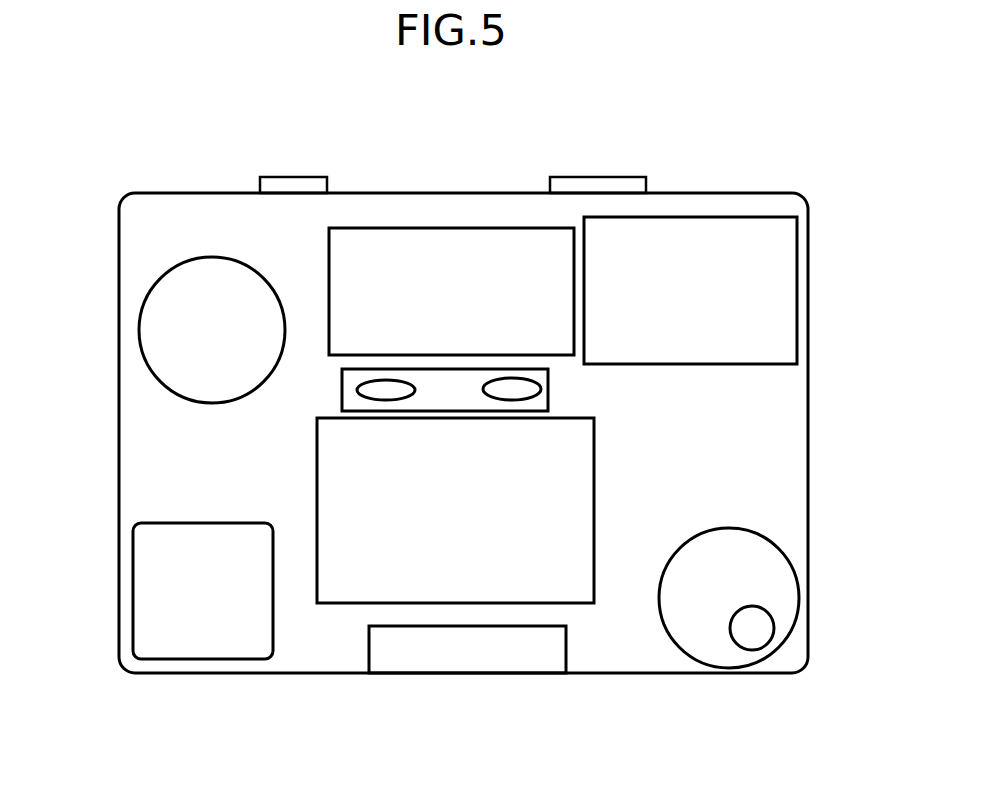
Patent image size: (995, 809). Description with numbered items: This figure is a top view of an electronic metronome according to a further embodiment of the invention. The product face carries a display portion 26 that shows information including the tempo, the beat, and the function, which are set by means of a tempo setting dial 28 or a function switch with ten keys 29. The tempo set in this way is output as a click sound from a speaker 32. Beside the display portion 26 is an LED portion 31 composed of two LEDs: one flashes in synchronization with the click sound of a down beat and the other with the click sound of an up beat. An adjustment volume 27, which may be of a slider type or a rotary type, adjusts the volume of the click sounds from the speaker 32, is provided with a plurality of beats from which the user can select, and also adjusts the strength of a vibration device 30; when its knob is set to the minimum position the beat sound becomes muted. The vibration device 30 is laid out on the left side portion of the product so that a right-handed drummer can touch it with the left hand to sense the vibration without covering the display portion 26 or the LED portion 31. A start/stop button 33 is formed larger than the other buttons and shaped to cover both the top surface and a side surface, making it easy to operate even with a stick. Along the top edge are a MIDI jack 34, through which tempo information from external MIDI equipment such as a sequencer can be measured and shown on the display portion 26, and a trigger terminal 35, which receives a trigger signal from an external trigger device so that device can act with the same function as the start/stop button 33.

The display portion 26 is at (461, 250).
The adjustment volume 27 is at (739, 213).
The tempo setting dial 28 is at (760, 574).
The function switch with ten keys 29 is at (583, 611).
The vibration device 30 is at (178, 603).
The LED portion 31 is at (334, 391).
The speaker 32 is at (148, 288).
The start/stop button 33 is at (426, 666).
The MIDI jack 34 is at (601, 174).
The trigger terminal 35 is at (300, 174).